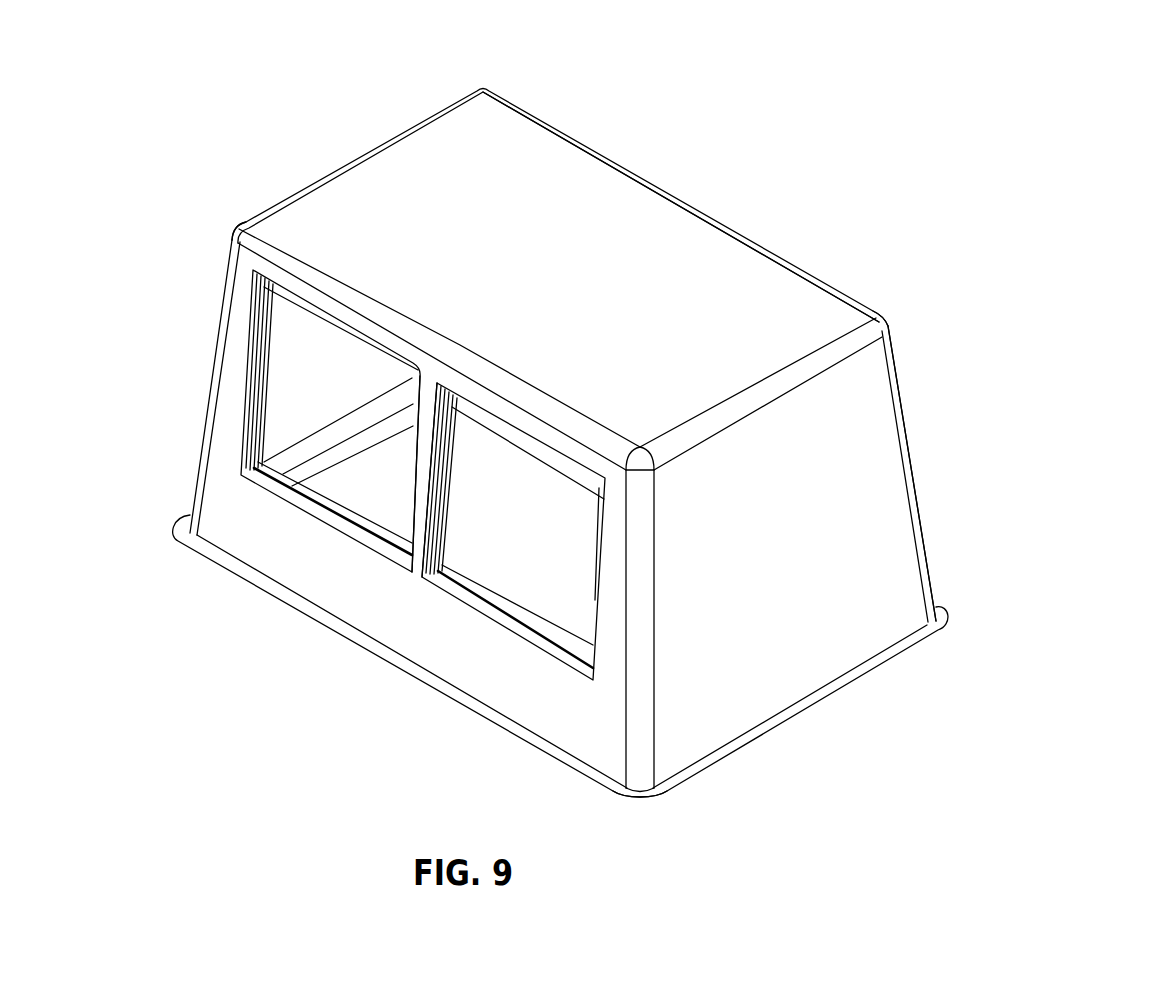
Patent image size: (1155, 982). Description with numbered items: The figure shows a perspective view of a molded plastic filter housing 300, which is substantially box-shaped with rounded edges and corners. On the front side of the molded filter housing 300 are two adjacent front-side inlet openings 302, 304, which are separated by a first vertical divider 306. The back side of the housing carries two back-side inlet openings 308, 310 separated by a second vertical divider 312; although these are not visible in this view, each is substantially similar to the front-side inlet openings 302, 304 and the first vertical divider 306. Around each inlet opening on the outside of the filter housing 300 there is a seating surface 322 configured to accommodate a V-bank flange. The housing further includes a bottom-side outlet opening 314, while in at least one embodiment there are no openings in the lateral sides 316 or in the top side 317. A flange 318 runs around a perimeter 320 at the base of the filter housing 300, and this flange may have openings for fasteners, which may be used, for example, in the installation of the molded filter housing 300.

The molded filter housing 300 is at (1044, 94).
The front-side inlet opening 302 is at (305, 477).
The front-side inlet opening 304 is at (518, 601).
The first vertical divider 306 is at (413, 575).
The back-side inlet opening 308 is at (556, 102).
The back-side inlet opening 310 is at (891, 281).
The second vertical divider 312 is at (761, 200).
The bottom-side outlet opening 314 is at (211, 208).
The lateral side 316 is at (857, 473).
The top side 317 is at (358, 195).
The flange 318 is at (895, 672).
The perimeter 320 is at (690, 766).
The seating surface 322 is at (328, 557).